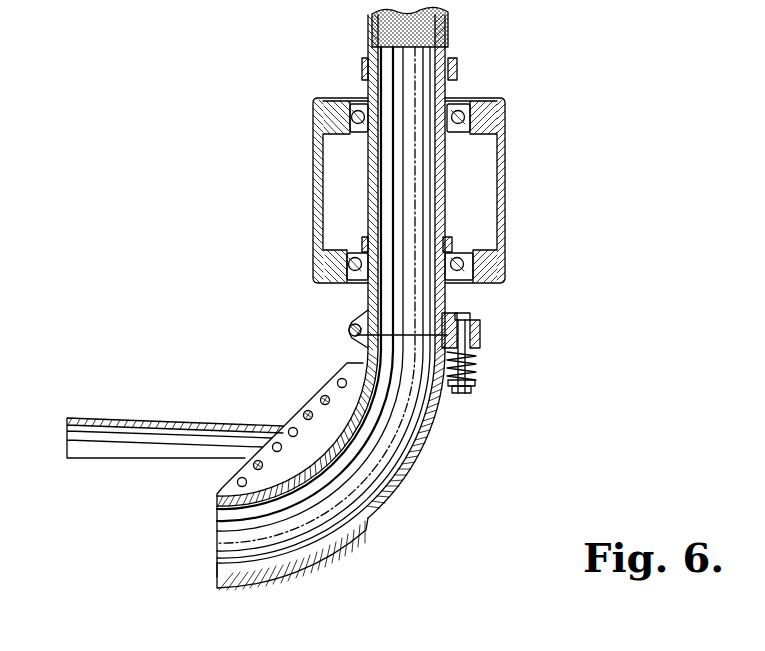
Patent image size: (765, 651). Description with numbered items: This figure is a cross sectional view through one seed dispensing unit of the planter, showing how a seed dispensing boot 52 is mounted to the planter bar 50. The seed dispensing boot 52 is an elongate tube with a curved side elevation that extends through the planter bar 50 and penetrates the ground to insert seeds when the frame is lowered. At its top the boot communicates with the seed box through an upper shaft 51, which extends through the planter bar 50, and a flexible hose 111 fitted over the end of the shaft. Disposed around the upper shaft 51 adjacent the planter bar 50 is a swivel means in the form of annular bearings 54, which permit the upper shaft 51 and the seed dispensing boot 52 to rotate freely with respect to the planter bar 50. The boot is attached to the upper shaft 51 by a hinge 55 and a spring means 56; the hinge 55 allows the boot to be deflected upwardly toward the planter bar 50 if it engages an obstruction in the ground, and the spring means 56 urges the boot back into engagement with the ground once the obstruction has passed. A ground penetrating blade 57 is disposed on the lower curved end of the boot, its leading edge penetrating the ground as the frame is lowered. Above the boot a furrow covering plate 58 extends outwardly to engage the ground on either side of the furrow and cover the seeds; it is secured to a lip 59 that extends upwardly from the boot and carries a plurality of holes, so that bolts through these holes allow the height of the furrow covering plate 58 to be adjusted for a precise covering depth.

The flexible hose 111 is at (450, 25).
The planter bar 50 is at (505, 191).
The upper shaft 51 is at (368, 185).
The seed dispensing boot 52 is at (418, 433).
The annular bearings 54 is at (466, 108).
The hinge 55 is at (349, 327).
The spring means 56 is at (478, 358).
The ground penetrating blade 57 is at (333, 553).
The furrow covering plate 58 is at (165, 418).
The lip 59 is at (313, 465).